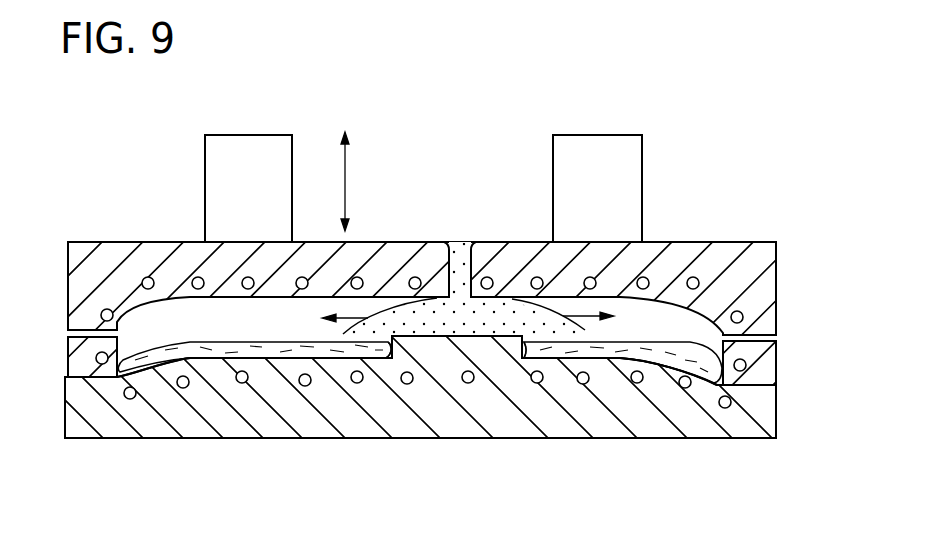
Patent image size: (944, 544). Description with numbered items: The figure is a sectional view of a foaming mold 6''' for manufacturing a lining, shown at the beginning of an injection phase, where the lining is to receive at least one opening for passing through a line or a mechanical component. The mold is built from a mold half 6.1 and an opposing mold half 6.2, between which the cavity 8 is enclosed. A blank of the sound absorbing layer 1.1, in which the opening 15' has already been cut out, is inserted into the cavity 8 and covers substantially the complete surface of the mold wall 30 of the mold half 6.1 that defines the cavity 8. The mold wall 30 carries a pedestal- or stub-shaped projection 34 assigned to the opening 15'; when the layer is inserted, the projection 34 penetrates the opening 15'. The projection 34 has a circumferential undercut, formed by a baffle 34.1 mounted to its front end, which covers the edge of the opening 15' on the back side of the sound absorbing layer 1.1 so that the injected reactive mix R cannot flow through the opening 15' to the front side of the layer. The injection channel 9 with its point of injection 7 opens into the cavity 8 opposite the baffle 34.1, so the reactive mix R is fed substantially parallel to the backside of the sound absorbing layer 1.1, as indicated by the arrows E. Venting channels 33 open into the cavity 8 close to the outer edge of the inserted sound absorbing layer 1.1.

The foaming mold 6''' is at (486, 161).
The mold half 6.1 is at (763, 427).
The upper mold half 6.2 is at (738, 242).
The cavity 8 is at (175, 313).
The venting channels 33 is at (82, 330).
The mold wall 30 is at (263, 358).
The sound absorbing layer 1.1 is at (213, 355).
The projection 34 is at (407, 347).
The baffle 34.1 is at (443, 340).
The opening 15' is at (456, 437).
The point of injection 7 is at (467, 245).
The injection channel 9 is at (447, 267).
The reactive mix R is at (497, 307).
The arrows E is at (335, 320).